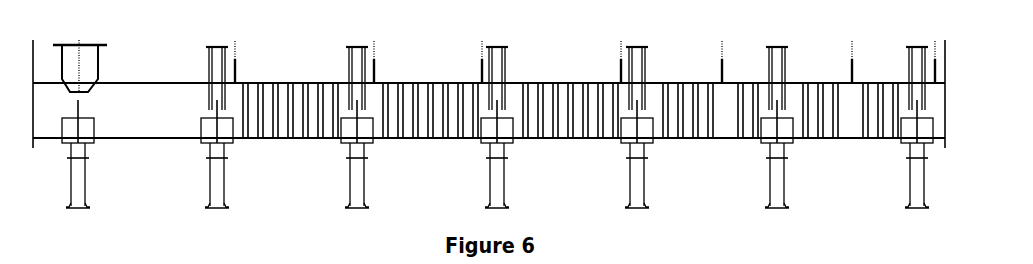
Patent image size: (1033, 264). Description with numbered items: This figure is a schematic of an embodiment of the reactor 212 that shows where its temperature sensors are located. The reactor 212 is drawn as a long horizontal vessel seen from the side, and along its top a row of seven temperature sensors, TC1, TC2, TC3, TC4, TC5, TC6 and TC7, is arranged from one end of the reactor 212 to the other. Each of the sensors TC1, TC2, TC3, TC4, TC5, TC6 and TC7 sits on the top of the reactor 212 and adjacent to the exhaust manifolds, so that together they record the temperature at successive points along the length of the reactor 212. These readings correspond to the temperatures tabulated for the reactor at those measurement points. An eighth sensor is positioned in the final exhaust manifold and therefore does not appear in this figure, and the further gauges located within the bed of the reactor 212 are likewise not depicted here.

The reactor 212 is at (94, 66).
The temperature sensor TC1 is at (232, 52).
The temperature sensor TC2 is at (372, 52).
The temperature sensor TC3 is at (478, 52).
The temperature sensor TC4 is at (613, 52).
The temperature sensor TC5 is at (713, 52).
The temperature sensor TC6 is at (843, 52).
The temperature sensor TC7 is at (932, 52).